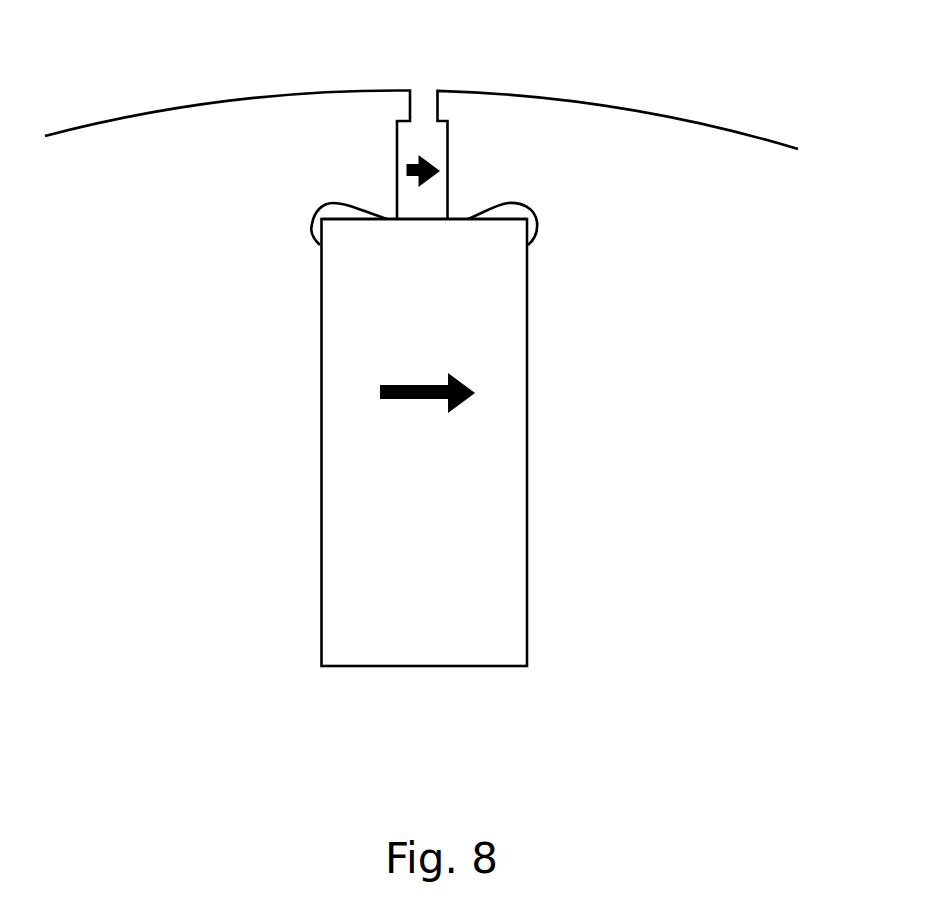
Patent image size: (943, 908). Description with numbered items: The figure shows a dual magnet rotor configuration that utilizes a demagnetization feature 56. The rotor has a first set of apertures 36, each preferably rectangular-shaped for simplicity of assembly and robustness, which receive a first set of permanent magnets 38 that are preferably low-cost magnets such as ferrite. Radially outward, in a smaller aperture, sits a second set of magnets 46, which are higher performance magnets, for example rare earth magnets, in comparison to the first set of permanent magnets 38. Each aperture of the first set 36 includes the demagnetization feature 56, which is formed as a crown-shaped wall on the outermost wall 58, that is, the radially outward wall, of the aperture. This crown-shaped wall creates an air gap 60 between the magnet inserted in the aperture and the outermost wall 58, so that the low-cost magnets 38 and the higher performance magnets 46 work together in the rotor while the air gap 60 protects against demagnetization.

The first set of apertures 36 is at (322, 555).
The first set of permanent magnets 38 is at (348, 457).
The second set of magnets 46 is at (440, 140).
The demagnetization feature 56 is at (313, 211).
The outermost wall 58 is at (373, 221).
The air gap 60 is at (340, 213).